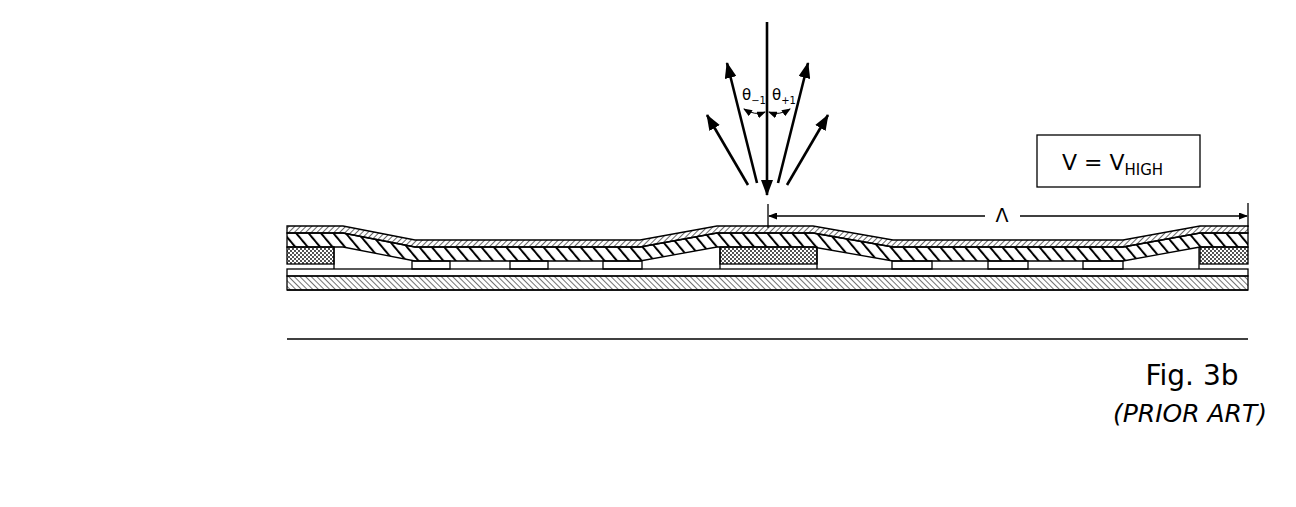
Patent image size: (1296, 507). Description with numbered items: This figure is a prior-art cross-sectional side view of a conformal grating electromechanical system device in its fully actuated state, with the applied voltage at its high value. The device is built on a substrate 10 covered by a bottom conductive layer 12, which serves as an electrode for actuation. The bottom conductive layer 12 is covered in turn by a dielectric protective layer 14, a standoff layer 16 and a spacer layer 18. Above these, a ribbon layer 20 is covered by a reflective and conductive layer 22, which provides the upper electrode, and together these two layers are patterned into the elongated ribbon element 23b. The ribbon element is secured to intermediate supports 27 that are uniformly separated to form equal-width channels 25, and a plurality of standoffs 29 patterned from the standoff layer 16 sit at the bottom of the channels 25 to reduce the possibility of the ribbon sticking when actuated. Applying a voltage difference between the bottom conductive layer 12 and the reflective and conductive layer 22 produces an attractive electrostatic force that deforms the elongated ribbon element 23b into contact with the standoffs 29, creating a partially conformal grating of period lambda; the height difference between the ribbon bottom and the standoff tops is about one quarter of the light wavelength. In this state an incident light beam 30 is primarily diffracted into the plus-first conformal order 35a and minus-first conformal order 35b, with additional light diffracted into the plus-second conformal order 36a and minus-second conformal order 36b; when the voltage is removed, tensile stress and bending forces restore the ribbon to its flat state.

The substrate 10 is at (337, 305).
The bottom conductive layer 12 is at (293, 292).
The dielectric protective layer 14 is at (297, 275).
The standoff layer 16 is at (297, 267).
The spacer layer 18 is at (297, 255).
The ribbon layer 20 is at (292, 239).
The reflective and conductive layer 22 is at (292, 230).
The elongated ribbon element 23b is at (722, 212).
The channels 25 is at (688, 262).
The intermediate supports 27 is at (778, 258).
The standoffs 29 is at (430, 265).
The incident light beam 30 is at (757, 55).
The +1st conformal order 35a is at (807, 95).
The −1st conformal order 35b is at (727, 97).
The +2nd conformal order 36a is at (817, 145).
The −2nd conformal order 36b is at (717, 145).